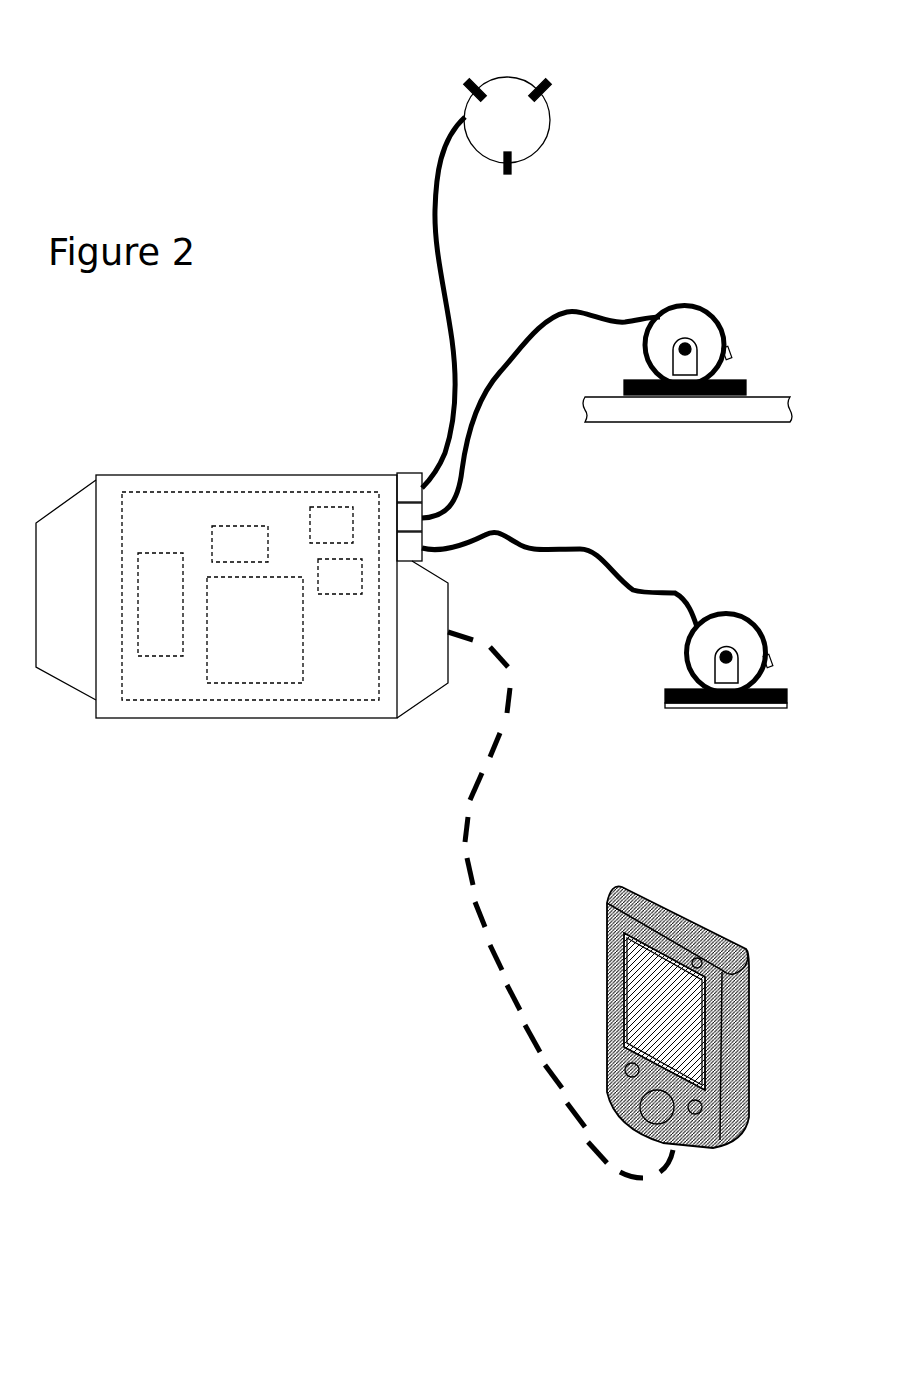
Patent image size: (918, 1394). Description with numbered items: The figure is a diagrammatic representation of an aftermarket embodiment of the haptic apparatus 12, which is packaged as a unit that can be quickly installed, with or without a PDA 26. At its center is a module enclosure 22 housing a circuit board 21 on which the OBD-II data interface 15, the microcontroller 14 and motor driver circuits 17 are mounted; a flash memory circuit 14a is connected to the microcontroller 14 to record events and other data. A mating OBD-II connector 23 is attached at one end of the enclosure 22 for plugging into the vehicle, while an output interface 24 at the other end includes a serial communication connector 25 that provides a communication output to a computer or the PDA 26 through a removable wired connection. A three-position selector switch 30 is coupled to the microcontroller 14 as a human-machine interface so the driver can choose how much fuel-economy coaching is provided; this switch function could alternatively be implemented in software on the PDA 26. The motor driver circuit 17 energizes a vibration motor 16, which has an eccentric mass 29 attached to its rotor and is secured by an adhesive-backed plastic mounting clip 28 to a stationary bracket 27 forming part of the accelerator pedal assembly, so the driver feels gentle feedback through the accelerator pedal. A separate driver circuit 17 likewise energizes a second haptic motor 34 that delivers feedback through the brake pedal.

The haptic apparatus 12 is at (354, 775).
The microcontroller 14 is at (255, 630).
The flash memory circuit 14a is at (240, 544).
The OBD-II data interface 15 is at (160, 604).
The motor 16 is at (615, 365).
The motor driver circuit 17 is at (336, 550).
The circuit board 21 is at (277, 510).
The module enclosure 22 is at (135, 475).
The OBD-II connector 23 is at (50, 515).
The output interface 24 is at (412, 455).
The RS-232C connector 25 is at (450, 592).
The PDA 26 is at (712, 925).
The stationary bracket 27 is at (767, 400).
The adhesive-backed plastic mounting clip 28 is at (676, 327).
The eccentric mass 29 is at (684, 366).
The selector switch 30 is at (503, 77).
The haptic motor 34 is at (749, 589).